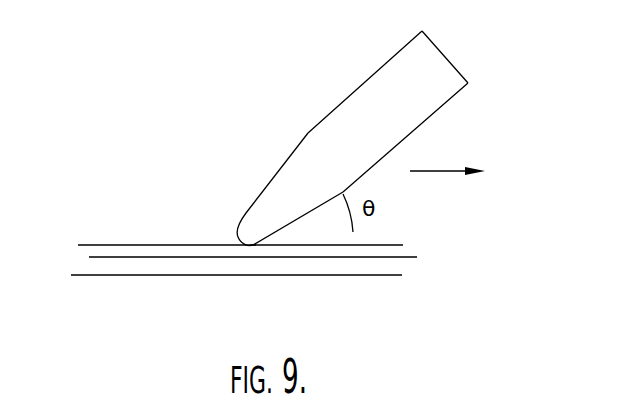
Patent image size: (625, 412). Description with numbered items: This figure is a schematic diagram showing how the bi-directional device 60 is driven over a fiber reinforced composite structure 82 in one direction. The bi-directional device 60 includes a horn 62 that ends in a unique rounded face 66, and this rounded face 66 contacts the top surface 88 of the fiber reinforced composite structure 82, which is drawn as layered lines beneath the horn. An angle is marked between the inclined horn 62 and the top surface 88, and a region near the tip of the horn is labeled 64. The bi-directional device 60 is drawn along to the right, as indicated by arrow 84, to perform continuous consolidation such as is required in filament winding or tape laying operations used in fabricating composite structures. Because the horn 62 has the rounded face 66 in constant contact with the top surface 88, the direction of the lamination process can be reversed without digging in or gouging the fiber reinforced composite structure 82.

The bi-directional device 60 is at (243, 84).
The horn 62 is at (443, 105).
The tapered tip 64 is at (245, 214).
The rounded face 66 is at (253, 245).
The fiber reinforced composite structure 82 is at (417, 246).
The arrow 84 is at (447, 170).
The top surface 88 is at (120, 245).